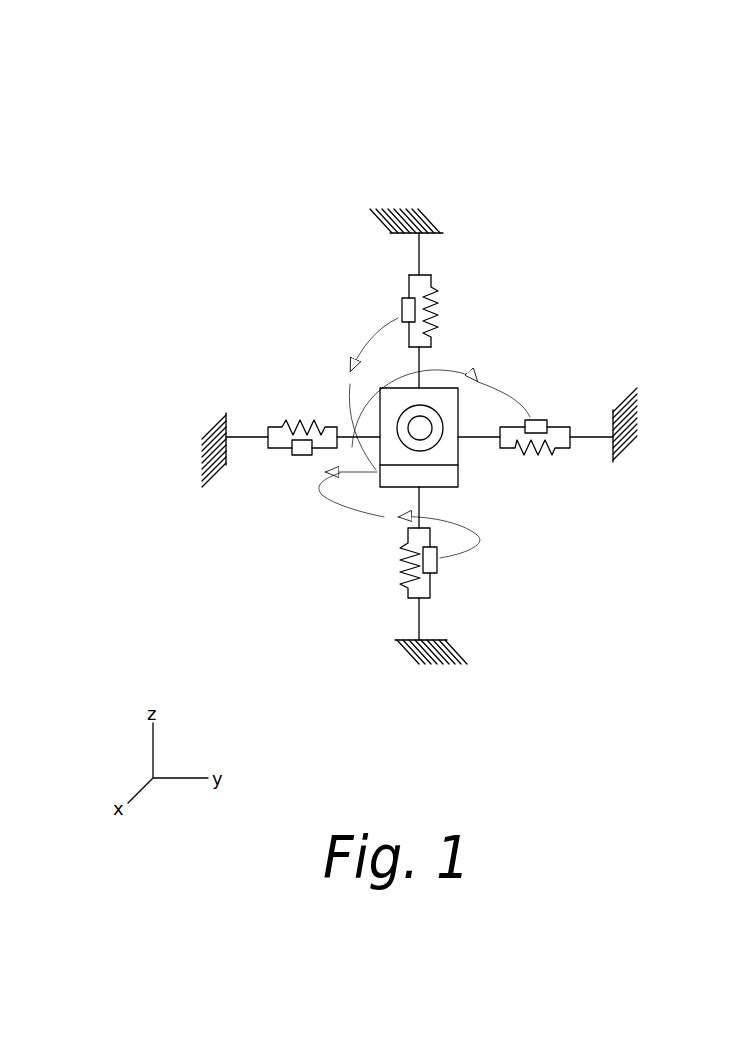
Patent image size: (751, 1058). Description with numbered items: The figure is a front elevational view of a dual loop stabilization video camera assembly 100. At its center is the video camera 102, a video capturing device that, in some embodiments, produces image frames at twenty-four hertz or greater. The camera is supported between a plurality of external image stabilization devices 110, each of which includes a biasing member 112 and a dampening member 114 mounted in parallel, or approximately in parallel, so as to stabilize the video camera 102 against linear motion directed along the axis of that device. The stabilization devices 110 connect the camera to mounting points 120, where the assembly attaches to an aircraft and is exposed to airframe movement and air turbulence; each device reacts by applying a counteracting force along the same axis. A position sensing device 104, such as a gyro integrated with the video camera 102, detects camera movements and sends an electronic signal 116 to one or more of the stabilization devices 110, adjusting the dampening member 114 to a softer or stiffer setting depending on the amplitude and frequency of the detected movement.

The assembly 100 is at (173, 128).
The video camera 102 is at (460, 455).
The position sensing device 104 is at (450, 490).
The external image stabilization device 110 is at (460, 296).
The biasing member 112 is at (437, 316).
The dampening member 114 is at (402, 305).
The electronic signal 116 is at (342, 374).
The mounting points 120 is at (370, 221).